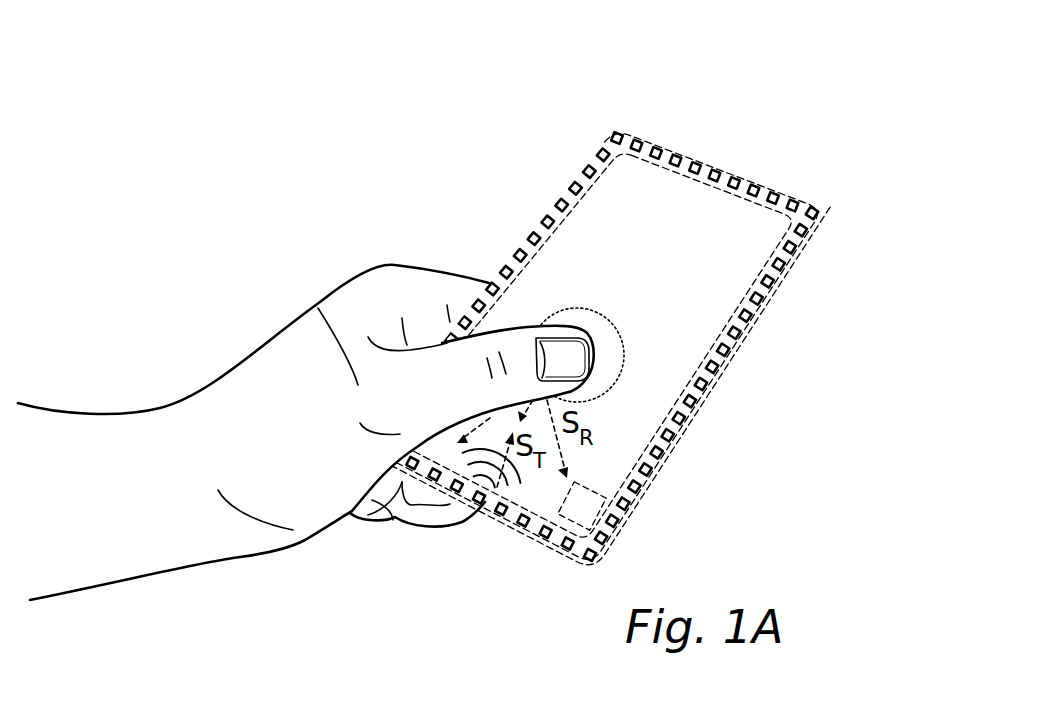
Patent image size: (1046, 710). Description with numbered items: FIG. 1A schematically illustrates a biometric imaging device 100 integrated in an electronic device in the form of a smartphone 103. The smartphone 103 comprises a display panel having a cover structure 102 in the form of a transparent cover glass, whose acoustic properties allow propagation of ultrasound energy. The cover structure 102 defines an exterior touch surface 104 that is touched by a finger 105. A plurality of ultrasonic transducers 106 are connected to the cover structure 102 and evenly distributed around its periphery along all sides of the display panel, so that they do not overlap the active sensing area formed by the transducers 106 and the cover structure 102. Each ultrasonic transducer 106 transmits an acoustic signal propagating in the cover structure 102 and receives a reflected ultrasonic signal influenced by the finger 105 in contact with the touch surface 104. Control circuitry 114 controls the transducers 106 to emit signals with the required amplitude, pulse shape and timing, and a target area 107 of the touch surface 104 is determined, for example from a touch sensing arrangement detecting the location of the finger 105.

The biometric imaging device 100 is at (728, 143).
The cover structure 102 is at (822, 220).
The smartphone 103 is at (747, 385).
The touch surface 104 is at (610, 222).
The finger 105 is at (318, 308).
The ultrasonic transducers 106 is at (493, 507).
The target area 107 is at (610, 327).
The control circuitry 114 is at (593, 492).